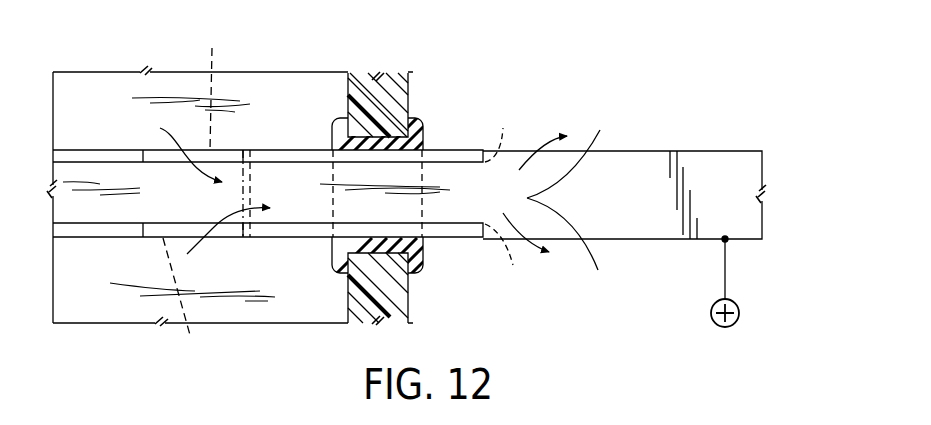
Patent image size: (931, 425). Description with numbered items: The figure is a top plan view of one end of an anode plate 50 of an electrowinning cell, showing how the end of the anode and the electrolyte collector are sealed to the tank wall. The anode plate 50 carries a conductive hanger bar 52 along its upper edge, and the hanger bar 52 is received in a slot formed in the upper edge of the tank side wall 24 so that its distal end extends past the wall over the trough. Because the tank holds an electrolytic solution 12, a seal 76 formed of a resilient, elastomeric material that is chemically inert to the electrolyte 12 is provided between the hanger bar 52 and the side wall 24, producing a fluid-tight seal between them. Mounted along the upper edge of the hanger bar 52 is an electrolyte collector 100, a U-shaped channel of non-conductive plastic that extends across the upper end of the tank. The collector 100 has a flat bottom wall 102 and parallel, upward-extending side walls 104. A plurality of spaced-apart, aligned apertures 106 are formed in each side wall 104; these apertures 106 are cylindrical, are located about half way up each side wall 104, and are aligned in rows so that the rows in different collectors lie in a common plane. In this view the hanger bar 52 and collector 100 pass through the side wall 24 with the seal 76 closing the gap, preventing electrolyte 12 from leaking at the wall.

The electrolytic solution 12 is at (246, 85).
The side wall 24 is at (397, 101).
The anode plate 50 is at (250, 176).
The hanger bar 52 is at (634, 165).
The seal 76 is at (420, 270).
The electrolyte collector 100 is at (100, 145).
The bottom wall 102 is at (456, 183).
The side wall 104 is at (118, 157).
The aperture 106 is at (195, 195).